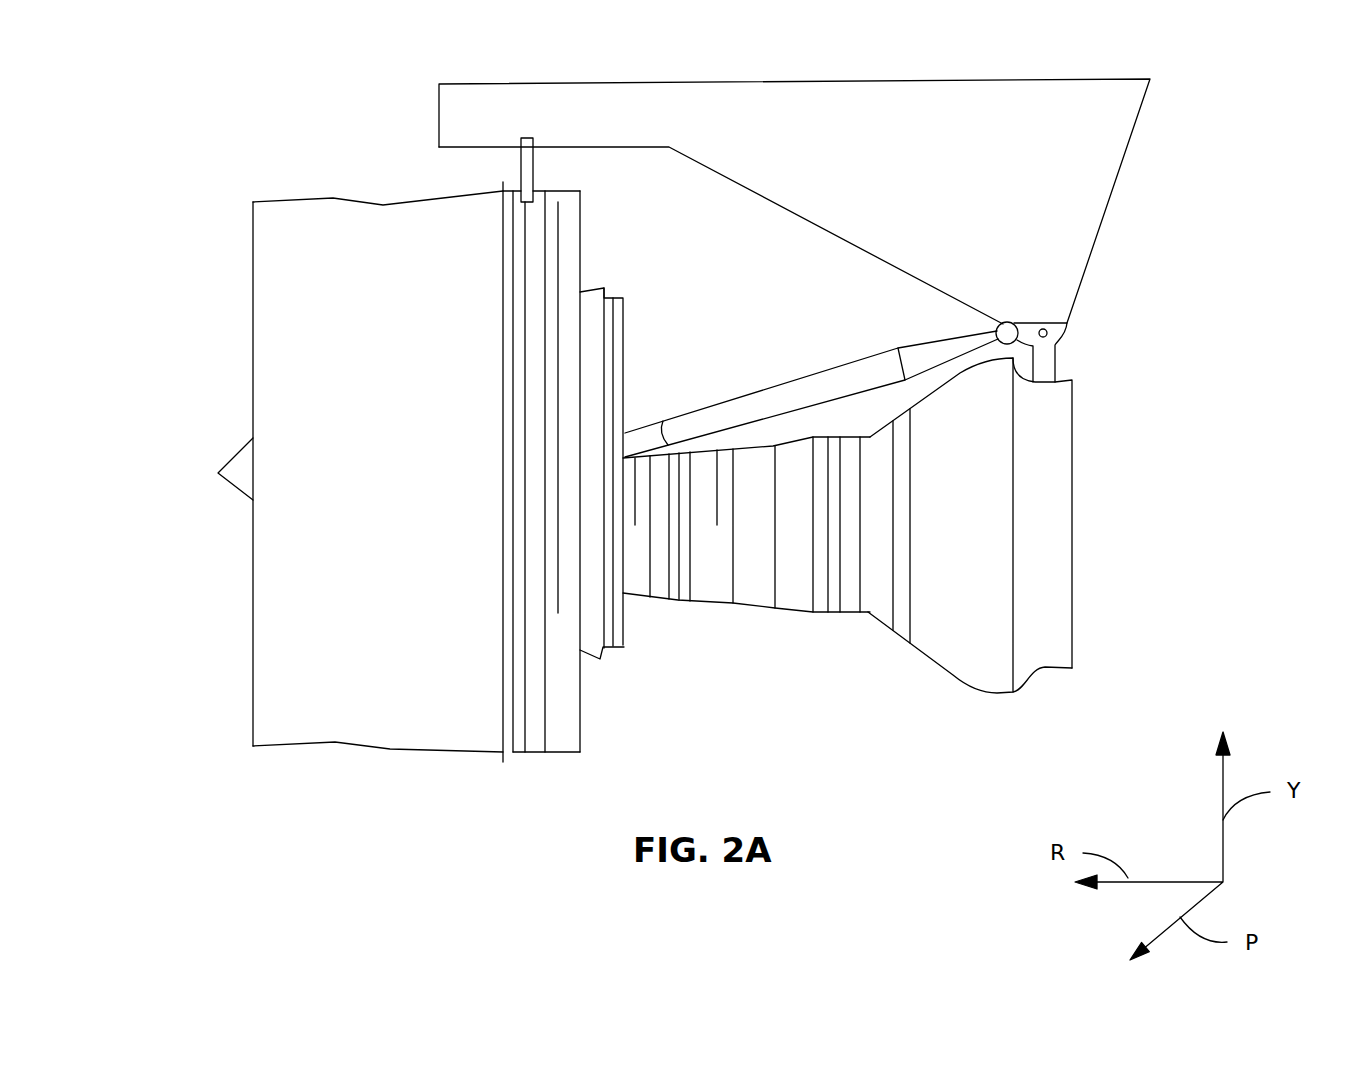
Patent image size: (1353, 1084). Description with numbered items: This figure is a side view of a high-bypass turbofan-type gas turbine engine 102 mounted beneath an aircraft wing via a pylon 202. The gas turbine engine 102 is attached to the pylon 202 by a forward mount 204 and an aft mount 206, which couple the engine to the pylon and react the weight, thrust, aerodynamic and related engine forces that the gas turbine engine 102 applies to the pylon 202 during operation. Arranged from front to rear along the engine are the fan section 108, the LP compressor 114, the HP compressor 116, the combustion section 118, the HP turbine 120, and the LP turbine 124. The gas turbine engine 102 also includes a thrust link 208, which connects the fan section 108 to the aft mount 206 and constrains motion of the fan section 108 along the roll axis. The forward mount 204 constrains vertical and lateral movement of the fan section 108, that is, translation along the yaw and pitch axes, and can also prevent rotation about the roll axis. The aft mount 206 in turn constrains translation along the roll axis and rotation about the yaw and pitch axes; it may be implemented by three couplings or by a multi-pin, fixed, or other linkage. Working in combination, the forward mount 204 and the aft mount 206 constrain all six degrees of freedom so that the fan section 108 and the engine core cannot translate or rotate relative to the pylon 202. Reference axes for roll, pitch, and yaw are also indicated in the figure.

The gas turbine engine 102 is at (188, 143).
The fan section 108 is at (253, 262).
The LP compressor 114 is at (628, 597).
The HP compressor 116 is at (746, 548).
The combustion section 118 is at (753, 606).
The HP turbine 120 is at (842, 613).
The LP turbine 124 is at (953, 678).
The pylon 202 is at (870, 80).
The forward mount 204 is at (521, 140).
The aft mount 206 is at (1038, 318).
The thrust link 208 is at (850, 360).